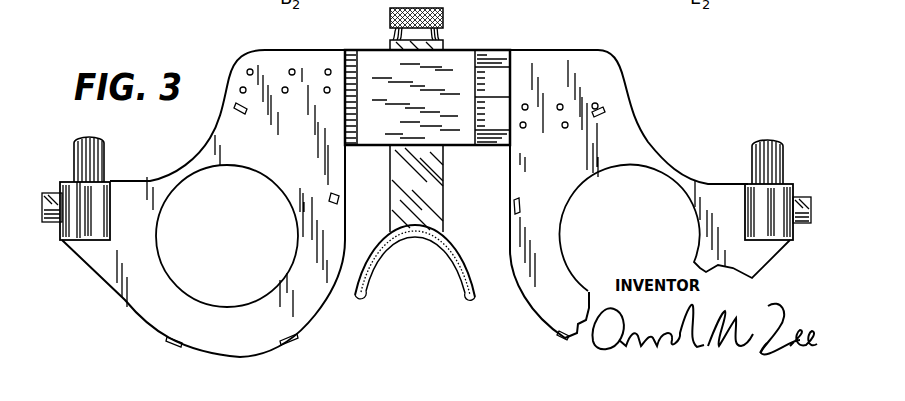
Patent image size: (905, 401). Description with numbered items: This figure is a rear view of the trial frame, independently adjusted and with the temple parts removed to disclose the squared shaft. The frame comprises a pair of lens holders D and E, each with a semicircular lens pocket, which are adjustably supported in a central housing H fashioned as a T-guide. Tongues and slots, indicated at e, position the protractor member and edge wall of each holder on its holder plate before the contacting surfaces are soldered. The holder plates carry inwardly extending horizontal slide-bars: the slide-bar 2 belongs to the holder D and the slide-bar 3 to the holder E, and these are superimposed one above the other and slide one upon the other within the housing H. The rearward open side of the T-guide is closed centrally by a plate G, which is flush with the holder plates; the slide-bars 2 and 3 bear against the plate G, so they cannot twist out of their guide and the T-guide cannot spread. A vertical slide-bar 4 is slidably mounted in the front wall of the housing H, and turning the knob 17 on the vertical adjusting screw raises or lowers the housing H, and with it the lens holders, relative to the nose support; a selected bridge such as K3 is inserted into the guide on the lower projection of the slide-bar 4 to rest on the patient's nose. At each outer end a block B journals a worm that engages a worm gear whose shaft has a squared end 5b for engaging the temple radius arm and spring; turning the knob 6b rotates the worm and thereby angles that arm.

The knob 17 is at (392, 18).
The central housing H is at (487, 60).
The plate G is at (416, 97).
The slide-bar 3 is at (492, 82).
The slide-bar 2 is at (492, 113).
The vertical slide-bar 4 is at (416, 188).
The bridge K3 is at (451, 260).
The lens holder E is at (310, 319).
The lens holder D is at (538, 313).
The tongues and slots e is at (243, 115).
The block B is at (111, 208).
The squared end 5b is at (53, 224).
The knob 6b is at (104, 164).